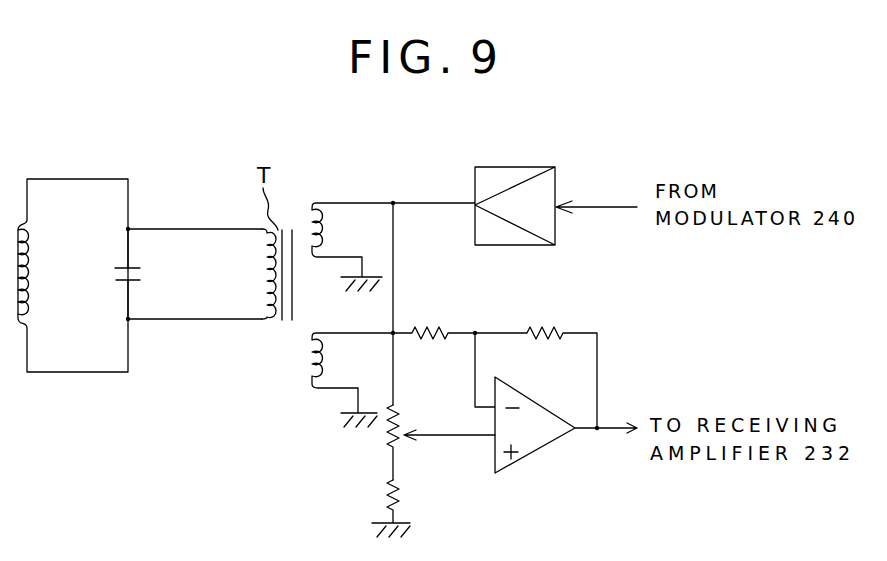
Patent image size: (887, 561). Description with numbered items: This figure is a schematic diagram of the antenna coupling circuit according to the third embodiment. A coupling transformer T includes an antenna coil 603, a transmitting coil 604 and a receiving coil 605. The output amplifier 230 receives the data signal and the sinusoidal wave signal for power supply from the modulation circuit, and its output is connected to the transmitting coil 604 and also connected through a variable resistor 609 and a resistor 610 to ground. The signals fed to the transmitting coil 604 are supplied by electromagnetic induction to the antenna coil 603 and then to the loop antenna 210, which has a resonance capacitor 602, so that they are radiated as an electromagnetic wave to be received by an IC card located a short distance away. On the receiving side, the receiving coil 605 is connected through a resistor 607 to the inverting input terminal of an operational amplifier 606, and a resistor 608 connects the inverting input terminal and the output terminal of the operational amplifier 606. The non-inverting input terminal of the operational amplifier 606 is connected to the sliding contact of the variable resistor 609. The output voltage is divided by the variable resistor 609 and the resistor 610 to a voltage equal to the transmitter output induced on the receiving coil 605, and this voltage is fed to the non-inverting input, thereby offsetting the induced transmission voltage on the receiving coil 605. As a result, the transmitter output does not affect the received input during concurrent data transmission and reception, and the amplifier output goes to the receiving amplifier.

The loop antenna 210 is at (33, 263).
The resonance capacitor 602 is at (143, 275).
The antenna coil 603 is at (257, 323).
The transmitting coil 604 is at (323, 202).
The receiving coil 605 is at (311, 392).
The operational amplifier 606 is at (538, 452).
The resistor 607 is at (430, 329).
The resistor 608 is at (555, 329).
The variable resistor 609 is at (402, 418).
The resistor 610 is at (393, 494).
The output amplifier 230 is at (530, 167).